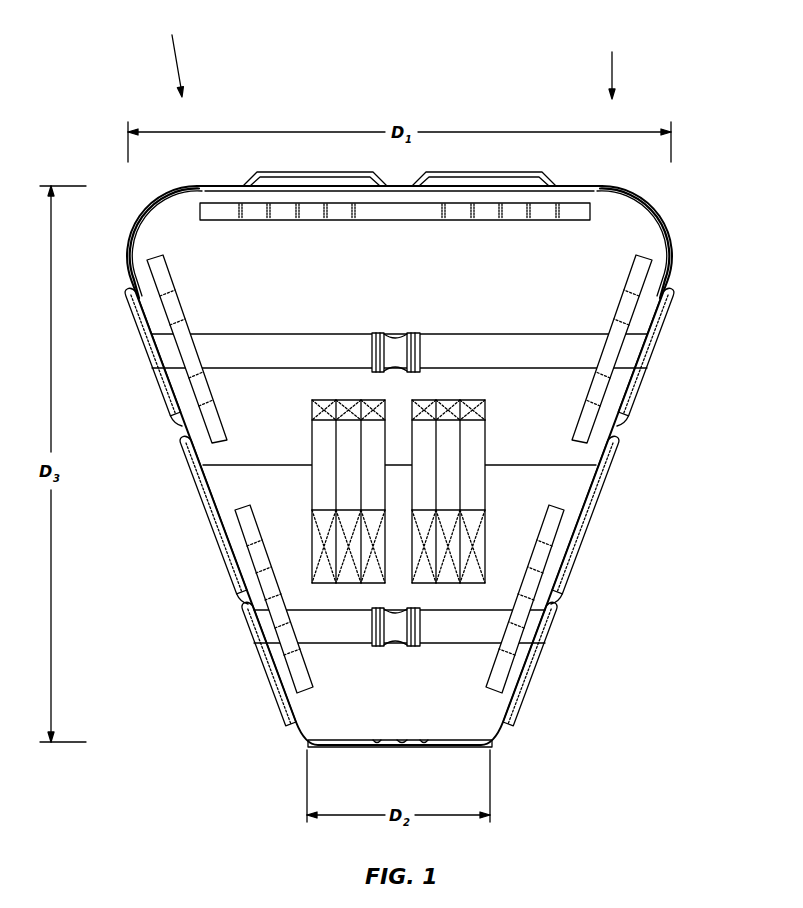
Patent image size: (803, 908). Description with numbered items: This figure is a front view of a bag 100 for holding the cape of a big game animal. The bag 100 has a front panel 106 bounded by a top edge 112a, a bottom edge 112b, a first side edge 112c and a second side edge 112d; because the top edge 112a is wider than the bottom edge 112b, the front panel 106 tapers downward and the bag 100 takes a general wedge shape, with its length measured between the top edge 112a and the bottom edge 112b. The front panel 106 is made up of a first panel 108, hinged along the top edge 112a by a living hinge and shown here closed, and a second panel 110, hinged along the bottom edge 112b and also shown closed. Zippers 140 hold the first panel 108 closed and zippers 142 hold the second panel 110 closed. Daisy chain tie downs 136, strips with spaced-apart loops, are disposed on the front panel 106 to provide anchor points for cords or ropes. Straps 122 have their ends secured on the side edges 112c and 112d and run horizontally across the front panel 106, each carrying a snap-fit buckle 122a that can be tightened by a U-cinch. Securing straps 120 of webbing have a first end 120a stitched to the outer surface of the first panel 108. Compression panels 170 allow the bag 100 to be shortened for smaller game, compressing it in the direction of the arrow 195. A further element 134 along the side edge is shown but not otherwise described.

The bag 100 is at (381, 72).
The front panel 106 is at (612, 235).
The first panel 108 is at (368, 290).
The second panel 110 is at (401, 698).
The top edge 112a is at (577, 188).
The bottom edge 112b is at (427, 748).
The first side edge 112c is at (165, 397).
The second side edge 112d is at (560, 575).
The securing straps 120 is at (323, 498).
The first end of the securing straps 120a is at (378, 403).
The straps 122 is at (573, 350).
The buckle 122a is at (400, 343).
The lower side flange 134 is at (557, 613).
The daisy chain tie downs 136 is at (217, 210).
The zippers 140 is at (190, 437).
The zippers 142 is at (210, 477).
The compression panels 170 is at (134, 228).
The arrow 195 is at (181, 66).